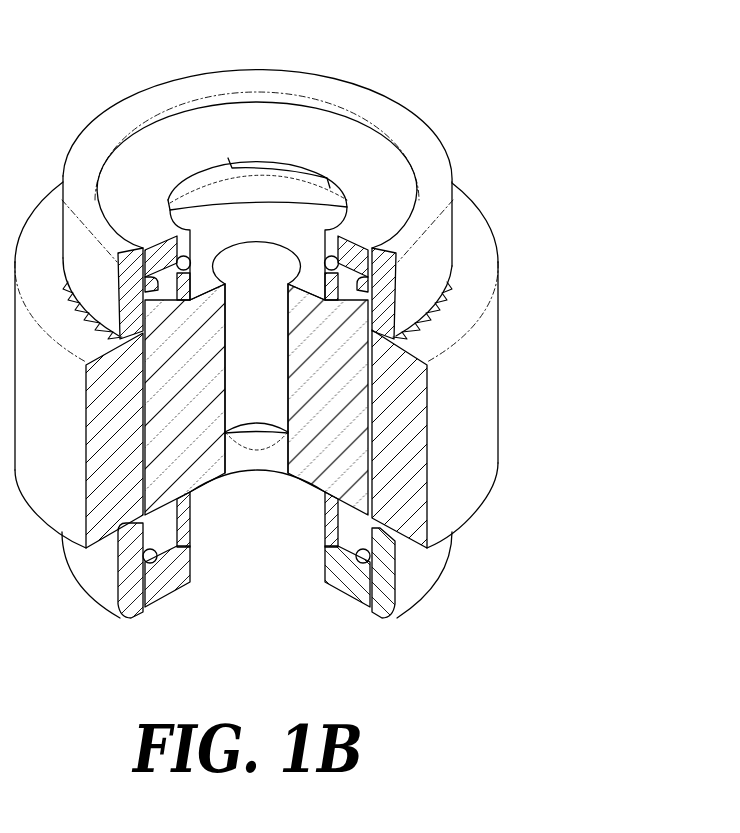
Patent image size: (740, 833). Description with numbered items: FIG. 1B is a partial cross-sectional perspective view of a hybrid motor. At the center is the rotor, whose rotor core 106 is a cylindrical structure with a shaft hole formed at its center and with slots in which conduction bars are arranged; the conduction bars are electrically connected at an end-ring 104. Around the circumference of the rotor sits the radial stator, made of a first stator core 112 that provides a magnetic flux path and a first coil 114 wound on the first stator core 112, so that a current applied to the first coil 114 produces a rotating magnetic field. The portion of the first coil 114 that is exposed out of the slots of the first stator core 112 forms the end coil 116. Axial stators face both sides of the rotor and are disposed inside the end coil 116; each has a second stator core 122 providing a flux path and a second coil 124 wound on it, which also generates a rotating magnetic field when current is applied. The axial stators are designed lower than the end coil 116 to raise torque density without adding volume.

The end-ring 104 is at (187, 500).
The rotor core 106 is at (300, 470).
The first stator core 112 is at (493, 387).
The first coil 114 is at (412, 313).
The end coil 116 is at (430, 140).
The second stator core 122 is at (290, 110).
The second coil 124 is at (328, 540).